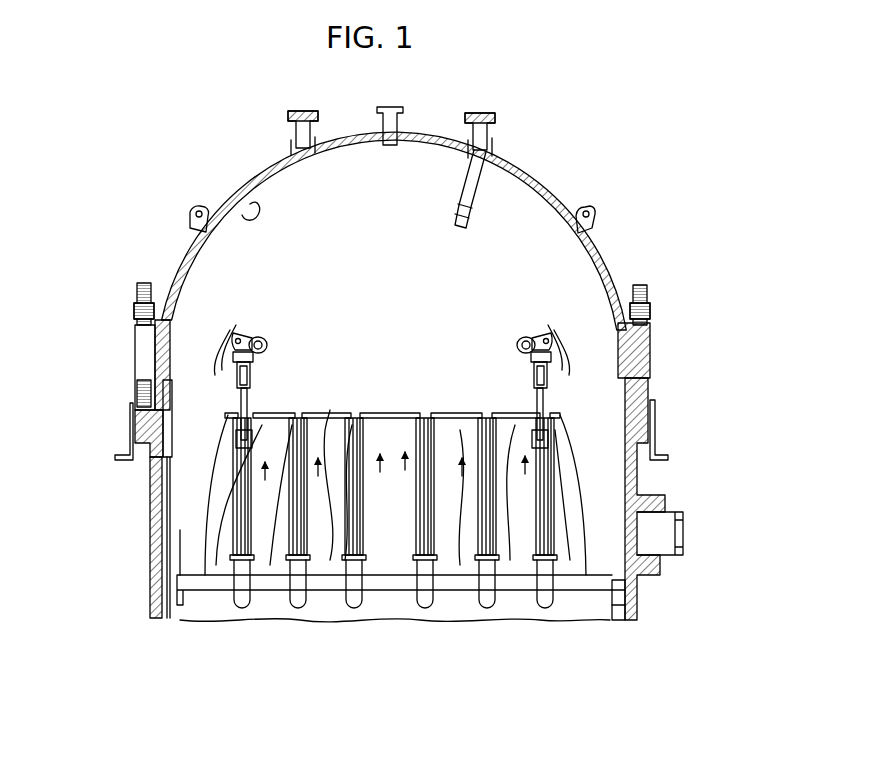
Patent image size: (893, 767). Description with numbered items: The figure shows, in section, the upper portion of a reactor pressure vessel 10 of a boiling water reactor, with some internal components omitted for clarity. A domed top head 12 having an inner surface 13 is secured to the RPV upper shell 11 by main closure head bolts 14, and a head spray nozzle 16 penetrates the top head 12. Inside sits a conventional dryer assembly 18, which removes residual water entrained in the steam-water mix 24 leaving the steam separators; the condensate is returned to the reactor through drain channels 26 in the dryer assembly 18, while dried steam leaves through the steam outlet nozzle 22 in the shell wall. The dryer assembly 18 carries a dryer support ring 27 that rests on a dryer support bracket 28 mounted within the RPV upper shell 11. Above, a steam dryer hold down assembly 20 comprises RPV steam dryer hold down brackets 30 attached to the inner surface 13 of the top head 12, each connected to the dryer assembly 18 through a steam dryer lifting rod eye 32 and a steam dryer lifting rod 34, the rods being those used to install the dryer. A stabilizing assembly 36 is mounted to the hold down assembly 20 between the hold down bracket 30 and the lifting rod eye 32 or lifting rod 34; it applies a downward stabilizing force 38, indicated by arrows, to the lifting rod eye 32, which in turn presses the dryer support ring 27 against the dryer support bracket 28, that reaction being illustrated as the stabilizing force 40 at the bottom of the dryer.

The reactor pressure vessel 10 is at (335, 670).
The RPV upper shell 11 is at (620, 402).
The top head 12 is at (522, 186).
The inner surface 13 is at (252, 205).
The main closure head bolts 14 is at (648, 290).
The head spray nozzle 16 is at (466, 207).
The dryer assembly 18 is at (574, 432).
The steam dryer hold down assembly 20 is at (284, 300).
The steam outlet nozzle 22 is at (683, 525).
The steam-water mix 24 is at (406, 488).
The drain channels 26 is at (330, 415).
The dryer support ring 27 is at (193, 595).
The dryer support bracket 28 is at (178, 607).
The RPV steam dryer hold down bracket 30 is at (230, 330).
The steam dryer lifting rod eye 32 is at (236, 386).
The steam dryer lifting rod 34 is at (238, 440).
The stabilizing assembly 36 is at (268, 332).
The stabilizing force 38 is at (237, 353).
The stabilizing force 40 is at (205, 598).